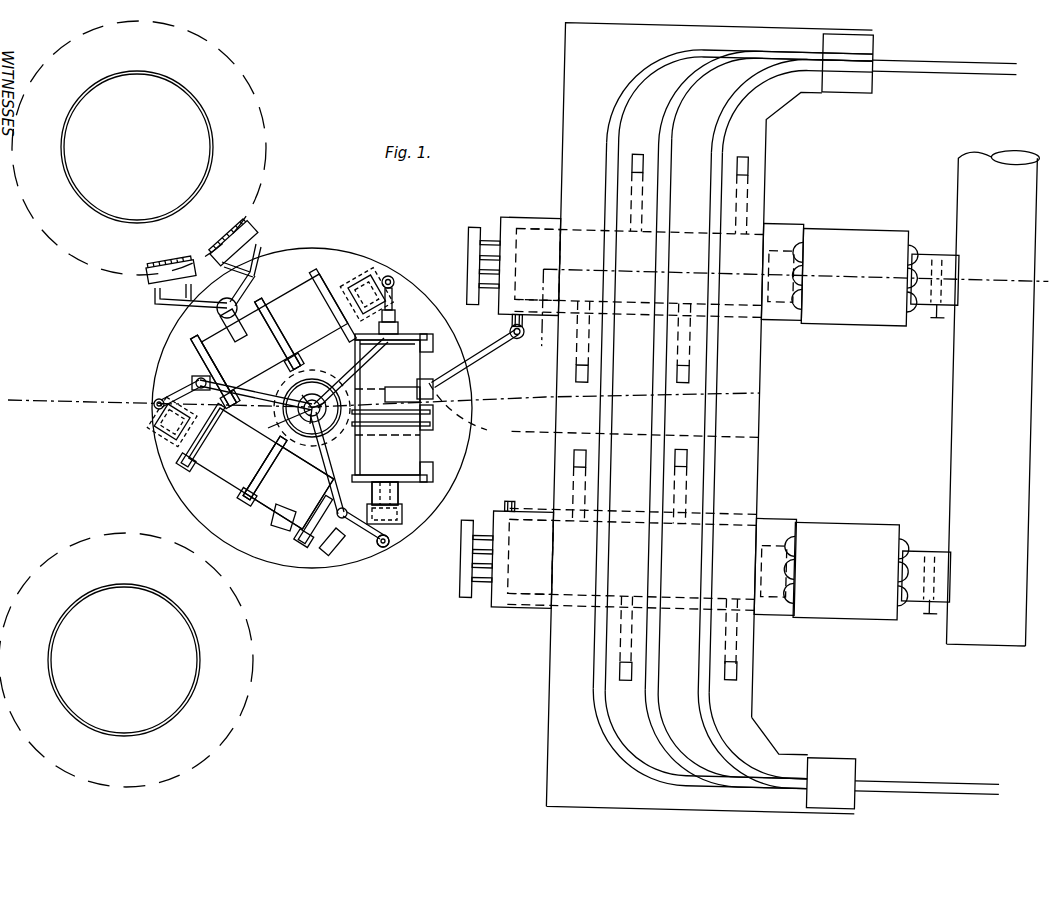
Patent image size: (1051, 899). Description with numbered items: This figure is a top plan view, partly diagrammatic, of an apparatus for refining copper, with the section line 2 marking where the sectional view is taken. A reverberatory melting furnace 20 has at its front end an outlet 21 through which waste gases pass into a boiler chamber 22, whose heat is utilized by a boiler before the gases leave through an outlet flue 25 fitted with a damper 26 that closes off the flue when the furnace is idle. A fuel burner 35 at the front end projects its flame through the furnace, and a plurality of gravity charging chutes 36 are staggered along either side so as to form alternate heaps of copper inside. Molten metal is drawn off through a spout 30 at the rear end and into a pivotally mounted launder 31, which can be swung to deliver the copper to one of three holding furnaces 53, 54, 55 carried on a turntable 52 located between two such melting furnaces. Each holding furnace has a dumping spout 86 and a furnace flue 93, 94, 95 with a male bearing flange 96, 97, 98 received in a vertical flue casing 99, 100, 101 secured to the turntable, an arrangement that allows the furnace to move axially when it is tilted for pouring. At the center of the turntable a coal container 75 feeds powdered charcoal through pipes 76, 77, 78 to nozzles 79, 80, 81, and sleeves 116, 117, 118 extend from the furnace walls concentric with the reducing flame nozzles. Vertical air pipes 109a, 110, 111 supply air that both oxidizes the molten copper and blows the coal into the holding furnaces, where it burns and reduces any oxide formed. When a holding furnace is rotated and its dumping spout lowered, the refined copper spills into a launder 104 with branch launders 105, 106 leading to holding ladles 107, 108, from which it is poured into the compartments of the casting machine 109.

The section line 2 is at (525, 335).
The reverberatory melting furnace 20 is at (546, 240).
The outlet 21 is at (780, 240).
The boiler chamber 22 is at (850, 424).
The outlet flue 25 is at (920, 256).
The damper 26 is at (920, 616).
The outlet opening or spout 30 is at (510, 326).
The pivotally mounted launder 31 is at (480, 352).
The fuel burner 35 is at (482, 291).
The gravity charging chutes 36 is at (638, 166).
The turntable 52 is at (357, 549).
The holding furnace 53 is at (289, 487).
The holding furnace 54 is at (392, 428).
The holding furnace 55 is at (271, 339).
The coal container 75 is at (276, 455).
The coal pipe 76 is at (392, 408).
The coal pipe 77 is at (258, 392).
The coal pipe 78 is at (335, 492).
The nozzle 79 is at (397, 316).
The nozzle 80 is at (193, 376).
The nozzle 81 is at (356, 530).
The dumping spout 86 is at (240, 304).
The furnace flue 93 is at (262, 472).
The furnace flue 94 is at (388, 479).
The furnace flue 95 is at (288, 333).
The male bearing flange 96 is at (184, 428).
The male bearing flange 97 is at (398, 498).
The male bearing flange 98 is at (356, 280).
The vertical flue casing 99 is at (156, 412).
The vertical flue casing 100 is at (402, 518).
The vertical flue casing 101 is at (372, 276).
The launder 104 is at (222, 320).
The branch launder 105 is at (170, 306).
The branch launder 106 is at (255, 268).
The holding ladle 107 is at (148, 284).
The holding ladle 108 is at (250, 240).
The casting machine 109 is at (133, 404).
The vertical air pipe 109a is at (386, 546).
The vertical air pipe 110 is at (395, 284).
The vertical air pipe 111 is at (157, 399).
The sleeve 116 is at (334, 545).
The sleeve 117 is at (430, 376).
The sleeve 118 is at (217, 371).